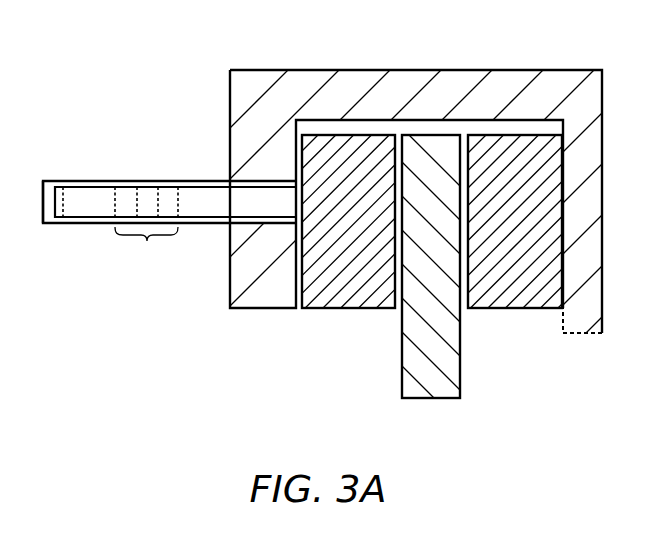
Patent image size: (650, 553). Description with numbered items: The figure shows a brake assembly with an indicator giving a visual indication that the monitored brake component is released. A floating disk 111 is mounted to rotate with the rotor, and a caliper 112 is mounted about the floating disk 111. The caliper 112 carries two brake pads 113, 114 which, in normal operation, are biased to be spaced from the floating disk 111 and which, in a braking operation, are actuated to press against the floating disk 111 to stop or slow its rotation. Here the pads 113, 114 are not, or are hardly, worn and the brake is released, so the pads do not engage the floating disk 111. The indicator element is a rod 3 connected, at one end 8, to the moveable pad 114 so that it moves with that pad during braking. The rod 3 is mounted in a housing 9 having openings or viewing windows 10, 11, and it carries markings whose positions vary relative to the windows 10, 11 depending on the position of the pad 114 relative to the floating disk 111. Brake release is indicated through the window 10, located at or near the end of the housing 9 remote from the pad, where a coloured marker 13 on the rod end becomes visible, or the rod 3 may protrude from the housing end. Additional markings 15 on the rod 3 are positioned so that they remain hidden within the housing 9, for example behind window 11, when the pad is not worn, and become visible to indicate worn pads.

The rod 3 is at (208, 207).
The end 8 is at (300, 197).
The housing 9 is at (137, 181).
The window 10 is at (63, 181).
The window 11 is at (207, 181).
The coloured marker 13 is at (63, 217).
The additional markings 15 is at (146, 248).
The floating disk 111 is at (432, 398).
The caliper 112 is at (573, 70).
The pad 113 is at (515, 308).
The pad 114 is at (350, 308).